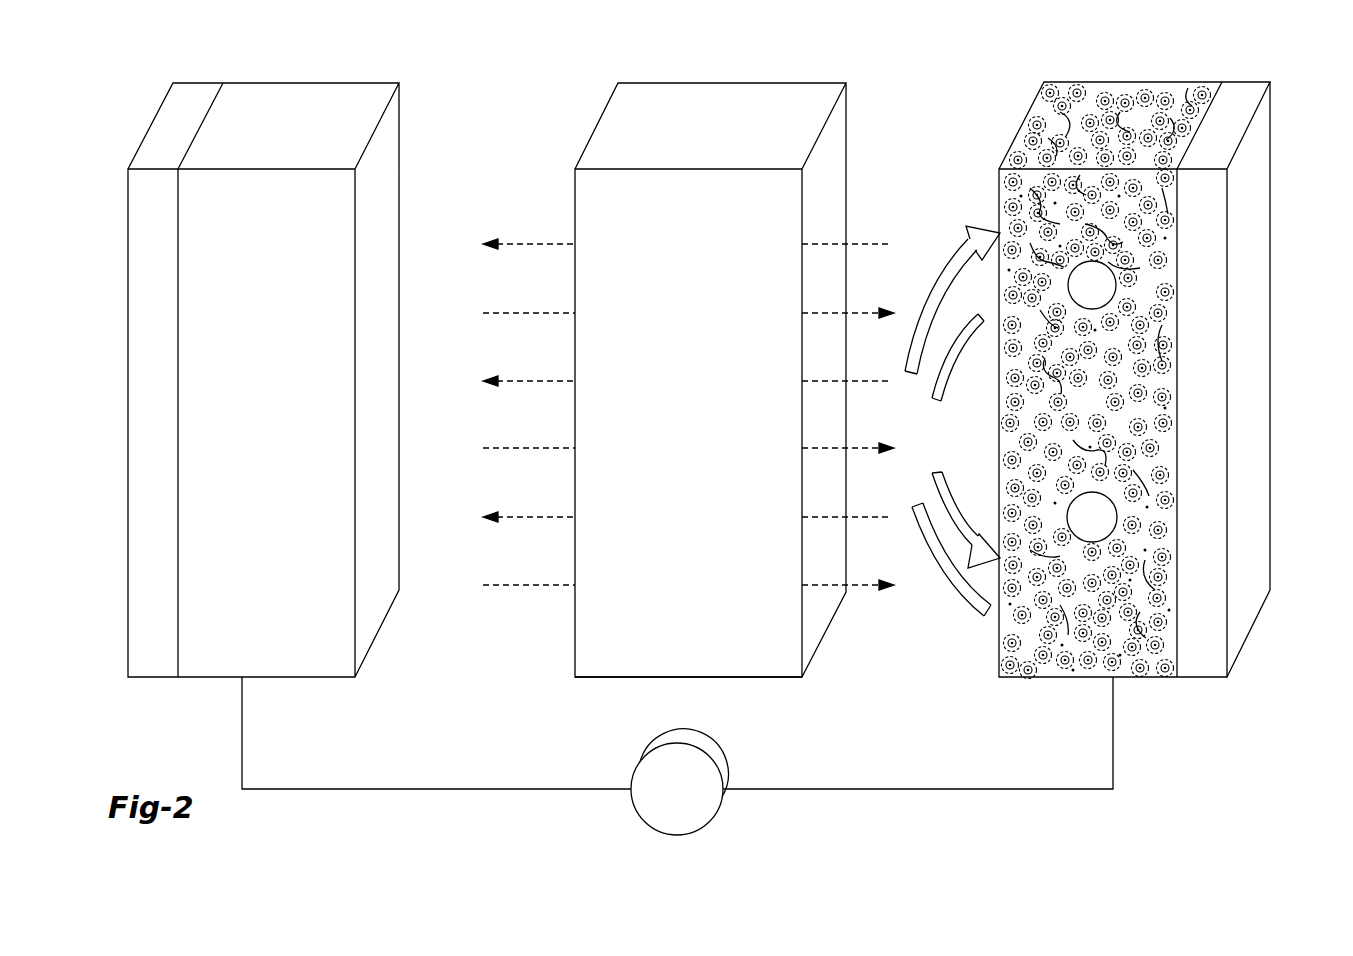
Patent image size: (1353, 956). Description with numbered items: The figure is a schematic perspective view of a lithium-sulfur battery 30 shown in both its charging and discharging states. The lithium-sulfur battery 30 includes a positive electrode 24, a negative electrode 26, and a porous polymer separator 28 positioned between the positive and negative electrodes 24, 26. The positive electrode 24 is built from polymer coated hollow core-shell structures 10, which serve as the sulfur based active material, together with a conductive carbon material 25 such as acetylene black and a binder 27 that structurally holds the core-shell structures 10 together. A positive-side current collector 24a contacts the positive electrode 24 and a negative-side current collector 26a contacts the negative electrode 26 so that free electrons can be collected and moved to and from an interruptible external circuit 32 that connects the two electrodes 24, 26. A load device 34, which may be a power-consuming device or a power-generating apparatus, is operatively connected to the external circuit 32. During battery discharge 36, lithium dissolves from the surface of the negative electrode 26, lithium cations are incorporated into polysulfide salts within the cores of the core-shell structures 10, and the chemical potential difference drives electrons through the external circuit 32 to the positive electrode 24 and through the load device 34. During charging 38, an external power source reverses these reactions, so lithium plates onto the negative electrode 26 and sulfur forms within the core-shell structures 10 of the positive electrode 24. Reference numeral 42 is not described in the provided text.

The polymer coated hollow core-shell structure 10 is at (1076, 84).
The positive electrode 24 is at (1166, 393).
The positive-side current collector 24a is at (1245, 205).
The conductive carbon material 25 is at (1186, 92).
The negative electrode 26 is at (274, 392).
The negative-side current collector 26a is at (150, 587).
The binder 27 is at (1092, 95).
The porous polymer separator 28 is at (602, 678).
The lithium-sulfur battery 30 is at (1282, 680).
The external circuit 32 is at (970, 790).
The load device 34 is at (686, 800).
The battery discharge 36 is at (870, 310).
The charging 38 is at (533, 242).
The electrolyte 42 is at (717, 82).